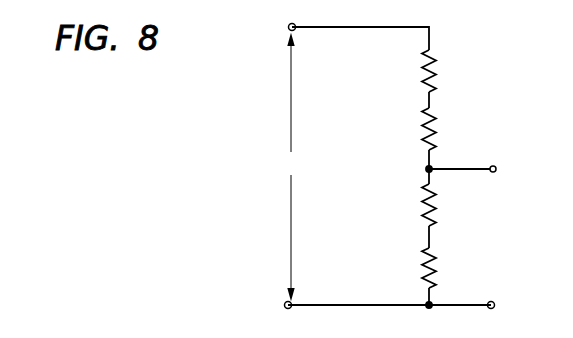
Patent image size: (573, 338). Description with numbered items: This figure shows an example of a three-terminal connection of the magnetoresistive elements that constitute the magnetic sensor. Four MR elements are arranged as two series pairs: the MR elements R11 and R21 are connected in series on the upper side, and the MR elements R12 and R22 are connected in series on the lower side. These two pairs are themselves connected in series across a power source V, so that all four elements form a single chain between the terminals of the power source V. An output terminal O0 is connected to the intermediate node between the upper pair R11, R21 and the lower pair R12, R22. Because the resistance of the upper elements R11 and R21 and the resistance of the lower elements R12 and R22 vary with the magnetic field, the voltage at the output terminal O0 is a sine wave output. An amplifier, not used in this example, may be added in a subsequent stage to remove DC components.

The MR element R11 is at (413, 71).
The MR element R21 is at (413, 129).
The MR element R12 is at (413, 205).
The MR element R22 is at (413, 268).
The power source V is at (290, 167).
The output terminal O0 is at (474, 170).